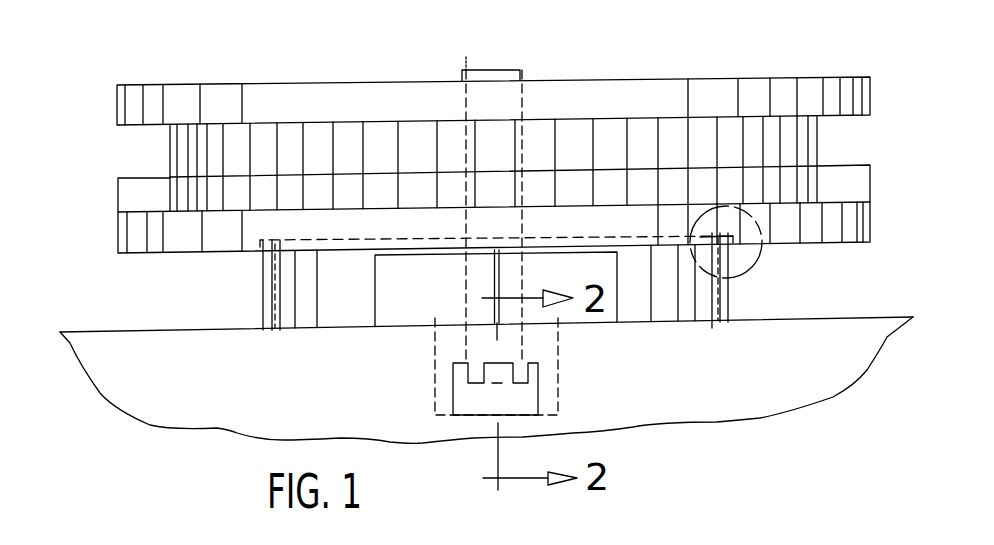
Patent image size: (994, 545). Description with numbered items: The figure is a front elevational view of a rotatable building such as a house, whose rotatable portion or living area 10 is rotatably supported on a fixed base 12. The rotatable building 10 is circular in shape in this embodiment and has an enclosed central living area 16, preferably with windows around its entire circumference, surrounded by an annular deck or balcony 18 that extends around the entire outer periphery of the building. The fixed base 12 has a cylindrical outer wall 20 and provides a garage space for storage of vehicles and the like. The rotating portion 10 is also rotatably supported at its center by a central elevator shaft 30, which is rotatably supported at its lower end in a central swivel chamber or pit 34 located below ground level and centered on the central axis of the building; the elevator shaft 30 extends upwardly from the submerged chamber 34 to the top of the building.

The rotatable portion or living area 10 is at (782, 61).
The fixed base 12 is at (245, 269).
The enclosed central living area 16 is at (170, 142).
The annular deck or balcony 18 is at (140, 210).
The cylindrical outer wall 20 is at (300, 310).
The central elevator shaft 30 is at (466, 270).
The central swivel chamber or pit 34 is at (542, 368).